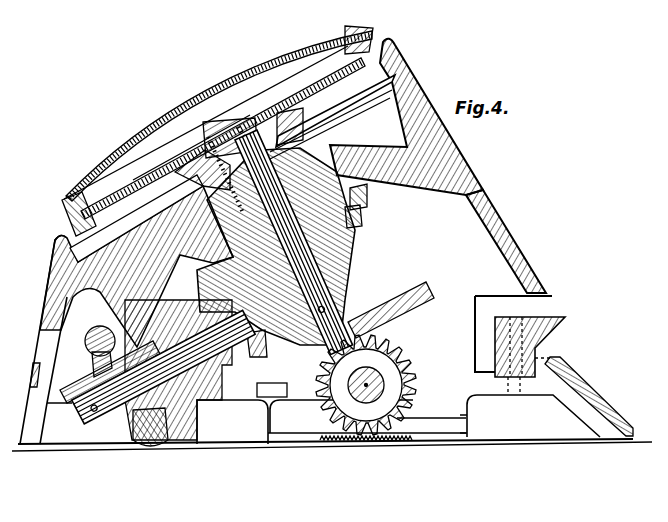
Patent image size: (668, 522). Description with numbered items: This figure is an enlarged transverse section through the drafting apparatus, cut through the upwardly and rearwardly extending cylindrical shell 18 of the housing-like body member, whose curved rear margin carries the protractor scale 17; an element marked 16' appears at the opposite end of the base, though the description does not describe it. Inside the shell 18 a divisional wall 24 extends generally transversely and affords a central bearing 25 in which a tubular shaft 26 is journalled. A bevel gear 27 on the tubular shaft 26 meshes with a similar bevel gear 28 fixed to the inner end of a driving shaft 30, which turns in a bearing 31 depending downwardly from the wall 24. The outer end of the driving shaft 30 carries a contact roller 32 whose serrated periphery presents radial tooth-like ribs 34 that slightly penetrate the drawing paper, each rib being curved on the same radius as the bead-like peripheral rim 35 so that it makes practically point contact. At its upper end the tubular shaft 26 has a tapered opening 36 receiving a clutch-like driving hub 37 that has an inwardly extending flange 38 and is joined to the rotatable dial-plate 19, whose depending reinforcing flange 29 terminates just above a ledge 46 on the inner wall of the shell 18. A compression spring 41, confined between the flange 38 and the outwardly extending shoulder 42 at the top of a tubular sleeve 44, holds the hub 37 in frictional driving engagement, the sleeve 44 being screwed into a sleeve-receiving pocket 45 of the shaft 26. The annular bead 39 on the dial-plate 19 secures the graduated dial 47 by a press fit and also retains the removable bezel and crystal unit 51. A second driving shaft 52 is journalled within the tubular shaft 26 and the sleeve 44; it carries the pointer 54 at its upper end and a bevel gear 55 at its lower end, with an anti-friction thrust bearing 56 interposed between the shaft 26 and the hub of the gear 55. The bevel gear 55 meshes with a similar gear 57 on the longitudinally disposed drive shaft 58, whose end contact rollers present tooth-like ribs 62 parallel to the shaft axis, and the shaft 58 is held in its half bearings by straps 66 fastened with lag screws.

The base support 16' is at (589, 412).
The scale 17 is at (35, 392).
The cylindrical shell 18 is at (505, 236).
The rotatable dial-plate 19 is at (335, 111).
The divisional wall 24 is at (432, 190).
The central bearing 25 is at (180, 252).
The tubular shaft 26 is at (358, 192).
The bevel gear 27 is at (352, 216).
The bevel gear 28 is at (256, 363).
The depending reinforcing flange 29 is at (392, 66).
The driving shaft 30 is at (82, 420).
The bearing 31 is at (198, 396).
The contact roller 32 is at (100, 325).
The tooth-like ribs 34 is at (152, 446).
The bead-like peripheral rim 35 is at (87, 360).
The tapered opening 36 is at (172, 204).
The clutch-like driving hub 37 is at (301, 123).
The inwardly extending flange 38 is at (318, 142).
The annular bead 39 is at (368, 44).
The compression spring 41 is at (318, 128).
The outwardly extending shoulder 42 is at (240, 122).
The tubular sleeve 44 is at (373, 142).
The sleeve-receiving pocket 45 is at (186, 232).
The ledge 46 is at (398, 92).
The graduated dial 47 is at (105, 200).
The removable bezel and crystal unit 51 is at (57, 216).
The driving shaft 52 is at (324, 264).
The pointer 54 is at (158, 150).
The bevel gear 55 is at (400, 300).
The anti-friction thrust bearing 56 is at (336, 280).
The gear 57 is at (400, 356).
The drive shaft 58 is at (382, 382).
The tooth-like ribs 62 is at (368, 451).
The straps 66 is at (432, 430).